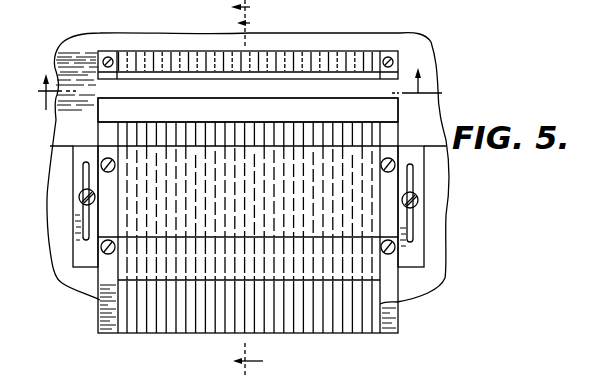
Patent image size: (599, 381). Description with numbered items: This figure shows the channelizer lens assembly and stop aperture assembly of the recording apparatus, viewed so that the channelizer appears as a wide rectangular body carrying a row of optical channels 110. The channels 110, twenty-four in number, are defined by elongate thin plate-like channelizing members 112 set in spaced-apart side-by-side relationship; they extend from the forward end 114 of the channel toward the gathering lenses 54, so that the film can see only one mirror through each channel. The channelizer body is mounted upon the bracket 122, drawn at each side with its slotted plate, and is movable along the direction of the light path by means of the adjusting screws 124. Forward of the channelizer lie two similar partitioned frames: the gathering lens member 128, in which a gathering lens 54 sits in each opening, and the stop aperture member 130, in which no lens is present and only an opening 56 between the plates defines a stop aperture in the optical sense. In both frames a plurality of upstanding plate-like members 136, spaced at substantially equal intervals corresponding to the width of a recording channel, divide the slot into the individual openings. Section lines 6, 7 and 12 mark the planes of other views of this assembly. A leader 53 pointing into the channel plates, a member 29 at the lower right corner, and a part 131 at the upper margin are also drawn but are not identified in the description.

The gathering lenses 54 is at (144, 92).
The upstanding plate-like members 136 is at (178, 56).
The stop aperture member 130 is at (355, 52).
The stop aperture 56 is at (308, 76).
The comb grid 53 is at (340, 145).
The gathering lens member 128 is at (397, 110).
The adjusting screws 124 is at (417, 200).
The bracket 122 is at (433, 246).
The support member 29 is at (400, 311).
The channelizing members 112 is at (127, 264).
The optical channels 110 is at (140, 329).
The forward end of the channel 114 is at (196, 334).
The section line 6- 6 is at (239, 82).
The section line 7- 7 is at (240, 197).
The section line 12- 12 is at (225, 23).
The adjacent part 131 is at (539, 4).